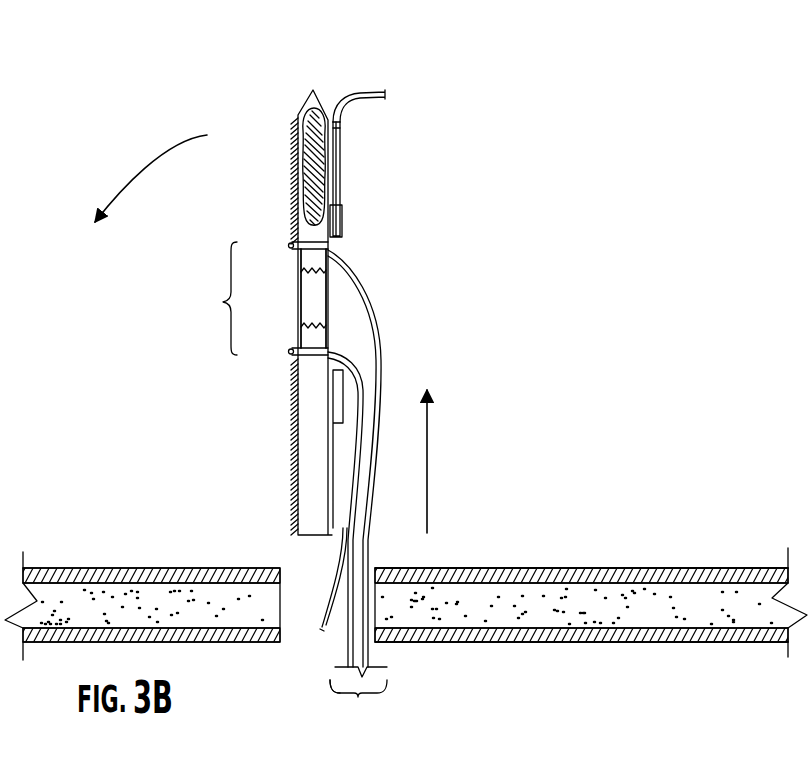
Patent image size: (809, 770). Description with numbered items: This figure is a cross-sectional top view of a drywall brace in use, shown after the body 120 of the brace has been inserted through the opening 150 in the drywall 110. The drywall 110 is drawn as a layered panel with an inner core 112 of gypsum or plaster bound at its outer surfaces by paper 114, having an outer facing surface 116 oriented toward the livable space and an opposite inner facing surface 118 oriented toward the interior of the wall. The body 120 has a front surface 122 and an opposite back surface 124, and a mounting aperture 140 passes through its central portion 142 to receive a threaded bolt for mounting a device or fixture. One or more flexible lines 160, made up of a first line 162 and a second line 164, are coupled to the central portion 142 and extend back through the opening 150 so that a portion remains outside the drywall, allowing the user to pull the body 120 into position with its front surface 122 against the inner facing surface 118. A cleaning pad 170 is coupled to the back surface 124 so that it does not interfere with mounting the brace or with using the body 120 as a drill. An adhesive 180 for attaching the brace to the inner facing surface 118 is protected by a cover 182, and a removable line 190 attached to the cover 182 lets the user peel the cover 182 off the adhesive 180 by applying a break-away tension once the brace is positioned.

The drywall 110 is at (406, 602).
The inner core 112 is at (717, 615).
The paper 114 is at (733, 568).
The outer facing surface 116 is at (530, 646).
The inner facing surface 118 is at (562, 566).
The body 120 is at (316, 537).
The front surface 122 is at (292, 241).
The back surface 124 is at (332, 257).
The mounting aperture 140 is at (306, 300).
The central portion 142 is at (210, 298).
The opening 150 is at (292, 647).
The flexible line 160 is at (358, 699).
The first line 162 is at (374, 311).
The second line 164 is at (364, 377).
The cleaning pad 170 is at (325, 102).
The adhesive 180 is at (340, 126).
The cover 182 is at (340, 167).
The removable line 190 is at (388, 92).